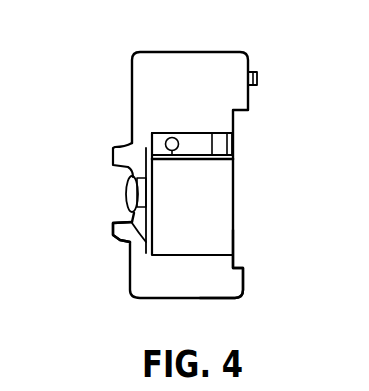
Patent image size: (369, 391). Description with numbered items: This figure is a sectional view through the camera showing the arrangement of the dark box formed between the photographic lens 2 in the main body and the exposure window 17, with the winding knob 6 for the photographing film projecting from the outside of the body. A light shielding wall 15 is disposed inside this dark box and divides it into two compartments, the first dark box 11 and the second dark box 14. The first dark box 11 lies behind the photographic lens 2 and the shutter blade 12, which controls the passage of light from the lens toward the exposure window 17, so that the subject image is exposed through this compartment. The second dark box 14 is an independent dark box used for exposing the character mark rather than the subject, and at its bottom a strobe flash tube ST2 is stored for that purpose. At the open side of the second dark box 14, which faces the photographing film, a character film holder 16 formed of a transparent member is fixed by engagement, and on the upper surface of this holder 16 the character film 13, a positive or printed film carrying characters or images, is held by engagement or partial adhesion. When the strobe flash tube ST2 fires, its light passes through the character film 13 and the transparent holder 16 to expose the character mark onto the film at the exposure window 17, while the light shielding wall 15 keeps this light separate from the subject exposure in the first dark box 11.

The photographic lens 2 is at (126, 202).
The winding knob 6 is at (257, 79).
The first dark box 11 is at (211, 213).
The shutter blade 12 is at (125, 240).
The character film 13 is at (233, 143).
The second dark box 14 is at (188, 145).
The light shielding wall 15 is at (198, 160).
The character film holder 16 is at (216, 137).
The exposure window 17 is at (244, 246).
The strobe flash tube for exposing the character mark ST2 is at (157, 133).